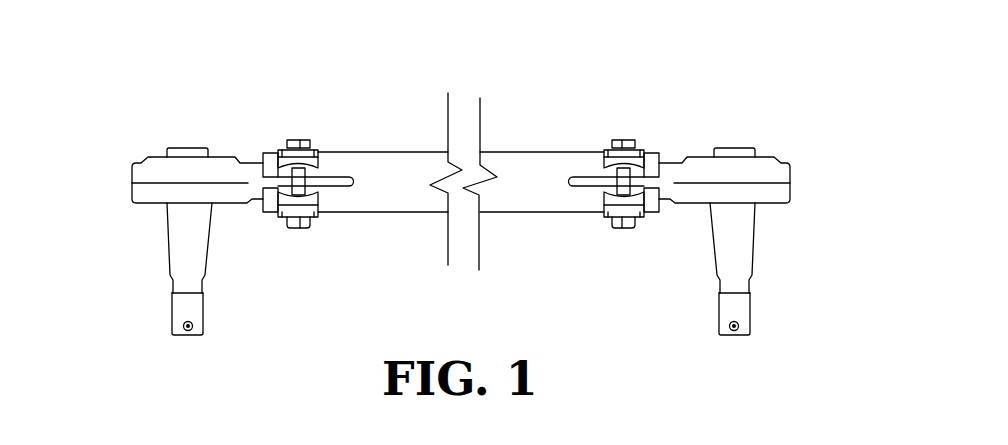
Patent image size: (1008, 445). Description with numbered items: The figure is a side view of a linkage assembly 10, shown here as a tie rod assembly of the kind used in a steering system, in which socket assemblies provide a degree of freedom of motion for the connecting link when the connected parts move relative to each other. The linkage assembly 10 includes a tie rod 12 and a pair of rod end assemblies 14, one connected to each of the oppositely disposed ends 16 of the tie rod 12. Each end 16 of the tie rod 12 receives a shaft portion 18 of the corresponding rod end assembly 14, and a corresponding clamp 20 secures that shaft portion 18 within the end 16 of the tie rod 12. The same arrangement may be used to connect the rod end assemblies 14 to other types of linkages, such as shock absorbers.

The linkage assembly 10 is at (504, 70).
The tie rod 12 is at (525, 170).
The rod end assembly 14 is at (142, 175).
The end of the tie rod 16 is at (270, 207).
The shaft portion 18 is at (258, 182).
The clamp 20 is at (317, 152).